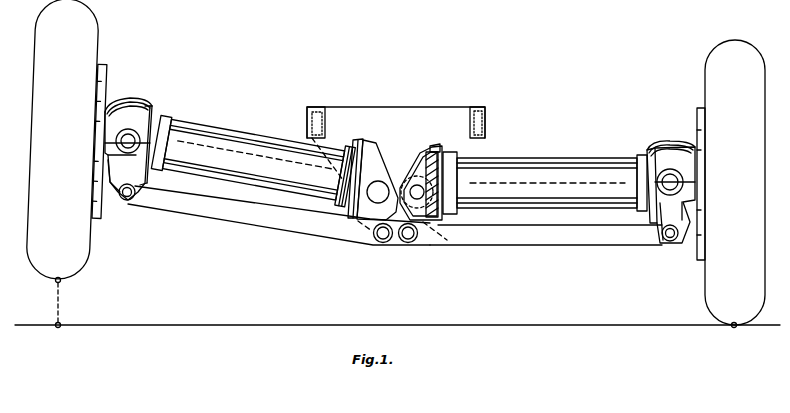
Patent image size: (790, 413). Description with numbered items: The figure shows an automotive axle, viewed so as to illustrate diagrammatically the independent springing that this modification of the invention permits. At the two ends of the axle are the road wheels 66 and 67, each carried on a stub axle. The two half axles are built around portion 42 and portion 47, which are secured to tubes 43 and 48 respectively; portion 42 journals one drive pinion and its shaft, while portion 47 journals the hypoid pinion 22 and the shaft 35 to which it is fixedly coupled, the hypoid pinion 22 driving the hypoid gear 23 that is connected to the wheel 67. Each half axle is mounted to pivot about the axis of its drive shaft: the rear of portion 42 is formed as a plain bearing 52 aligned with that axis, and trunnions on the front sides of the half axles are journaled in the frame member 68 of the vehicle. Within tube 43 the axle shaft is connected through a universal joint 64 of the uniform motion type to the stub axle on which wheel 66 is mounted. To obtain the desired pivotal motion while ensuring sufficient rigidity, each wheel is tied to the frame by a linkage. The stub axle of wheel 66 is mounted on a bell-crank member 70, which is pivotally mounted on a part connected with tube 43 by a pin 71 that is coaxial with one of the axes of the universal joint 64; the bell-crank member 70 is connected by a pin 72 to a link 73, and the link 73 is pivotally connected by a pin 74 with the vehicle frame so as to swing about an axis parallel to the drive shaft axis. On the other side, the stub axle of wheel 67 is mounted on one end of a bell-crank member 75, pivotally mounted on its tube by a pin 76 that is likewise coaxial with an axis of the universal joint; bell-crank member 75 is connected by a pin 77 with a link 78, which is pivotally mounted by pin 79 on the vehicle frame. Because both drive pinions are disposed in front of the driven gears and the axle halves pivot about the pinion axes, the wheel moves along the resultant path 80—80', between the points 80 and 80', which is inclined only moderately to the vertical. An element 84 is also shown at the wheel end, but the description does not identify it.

The road wheel 66 is at (90, 43).
The road wheel 67 is at (708, 70).
The universal joint 64 is at (133, 107).
The pin 71 is at (130, 139).
The bell-crank member 70 is at (124, 176).
The pin 72 is at (129, 201).
The link 73 is at (272, 215).
The tube 43 is at (232, 142).
The portion of half axle 42 is at (374, 165).
The plain bearing 52 is at (381, 189).
The frame member 68 is at (393, 115).
The portion of half axle 47 is at (437, 145).
The hypoid gear 23 is at (440, 162).
The hypoid pinion 22 is at (423, 224).
The shaft 35 is at (440, 187).
The pin 74 is at (383, 243).
The pin 79 is at (408, 243).
The tube 48 is at (547, 168).
The link 78 is at (585, 237).
The pin 77 is at (670, 242).
The pin 76 is at (666, 177).
The right steering knuckle 84 is at (667, 143).
The bell-crank member 75 is at (692, 147).
The resultant path end 80' is at (74, 300).
The resultant path 80 is at (67, 341).